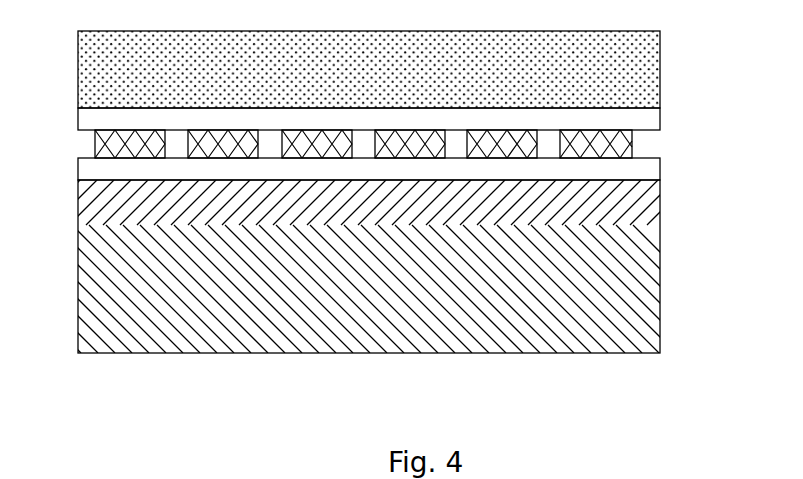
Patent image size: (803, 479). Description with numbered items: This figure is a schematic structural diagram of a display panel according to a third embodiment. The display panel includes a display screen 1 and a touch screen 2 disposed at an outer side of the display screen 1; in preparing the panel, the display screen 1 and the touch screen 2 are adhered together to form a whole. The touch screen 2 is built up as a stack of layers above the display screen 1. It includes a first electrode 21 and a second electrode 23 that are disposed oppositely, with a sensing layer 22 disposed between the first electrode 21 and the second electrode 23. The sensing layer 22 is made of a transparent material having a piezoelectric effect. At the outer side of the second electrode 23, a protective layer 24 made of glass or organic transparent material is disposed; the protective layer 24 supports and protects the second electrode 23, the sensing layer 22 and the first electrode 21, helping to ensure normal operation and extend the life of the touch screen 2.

The display screen 1 is at (623, 287).
The touch screen 2 is at (398, 106).
The first electrode 21 is at (618, 178).
The sensing layer 22 is at (633, 148).
The second electrode 23 is at (633, 122).
The protective layer 24 is at (637, 72).